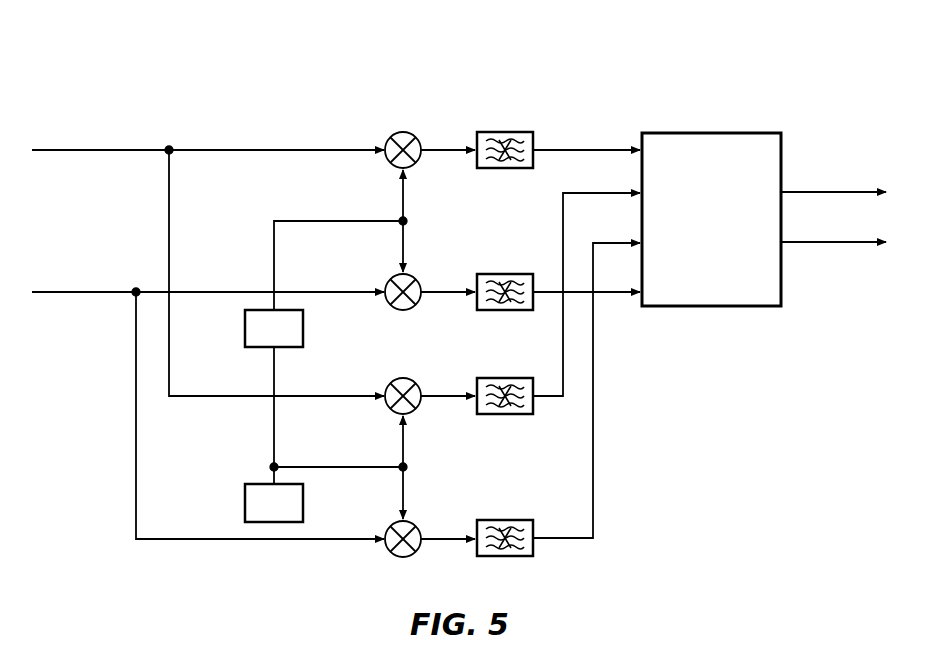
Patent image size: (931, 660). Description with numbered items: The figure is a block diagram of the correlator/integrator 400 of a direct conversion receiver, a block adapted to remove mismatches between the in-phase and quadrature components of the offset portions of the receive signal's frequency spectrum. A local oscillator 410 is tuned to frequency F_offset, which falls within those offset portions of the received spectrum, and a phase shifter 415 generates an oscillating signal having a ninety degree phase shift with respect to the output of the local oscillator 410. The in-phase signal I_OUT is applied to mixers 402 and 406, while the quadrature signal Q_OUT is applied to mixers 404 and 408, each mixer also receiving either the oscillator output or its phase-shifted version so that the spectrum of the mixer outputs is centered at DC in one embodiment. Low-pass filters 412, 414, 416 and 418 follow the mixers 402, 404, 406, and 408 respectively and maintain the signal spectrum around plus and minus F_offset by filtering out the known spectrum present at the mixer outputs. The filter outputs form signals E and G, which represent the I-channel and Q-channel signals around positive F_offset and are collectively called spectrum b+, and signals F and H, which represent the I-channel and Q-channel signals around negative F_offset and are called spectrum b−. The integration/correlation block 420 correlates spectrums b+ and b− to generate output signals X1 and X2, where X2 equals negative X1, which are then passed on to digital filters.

The correlator/integrator 400 is at (820, 72).
The mixer 402 is at (392, 135).
The mixer 404 is at (392, 277).
The mixer 406 is at (392, 381).
The mixer 408 is at (392, 524).
The local oscillator 410 is at (265, 485).
The low-pass filter 412 is at (503, 168).
The low-pass filter 414 is at (503, 310).
The phase shifter 415 is at (263, 347).
The low-pass filter 416 is at (503, 414).
The low-pass filter 418 is at (503, 557).
The integration/correlation block 420 is at (712, 306).